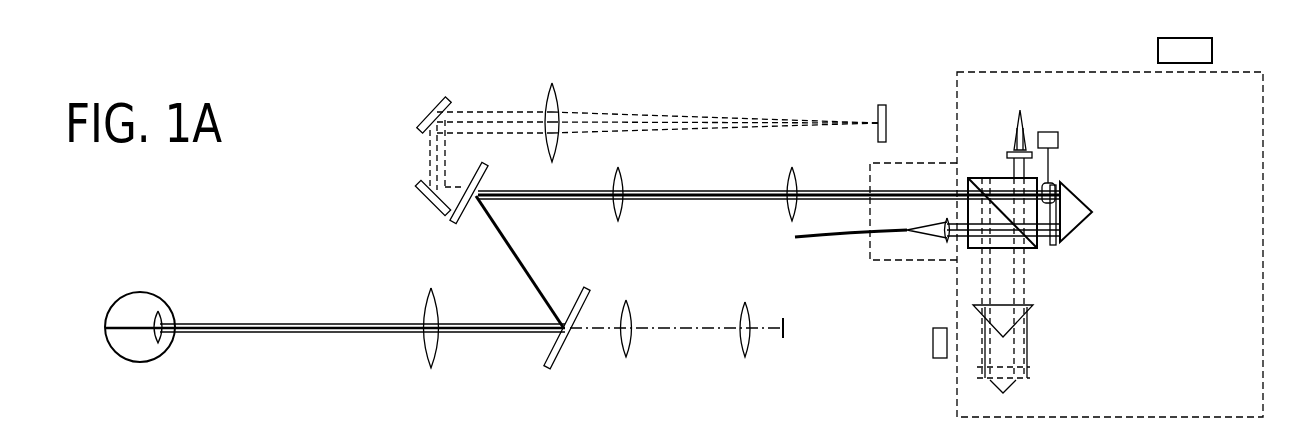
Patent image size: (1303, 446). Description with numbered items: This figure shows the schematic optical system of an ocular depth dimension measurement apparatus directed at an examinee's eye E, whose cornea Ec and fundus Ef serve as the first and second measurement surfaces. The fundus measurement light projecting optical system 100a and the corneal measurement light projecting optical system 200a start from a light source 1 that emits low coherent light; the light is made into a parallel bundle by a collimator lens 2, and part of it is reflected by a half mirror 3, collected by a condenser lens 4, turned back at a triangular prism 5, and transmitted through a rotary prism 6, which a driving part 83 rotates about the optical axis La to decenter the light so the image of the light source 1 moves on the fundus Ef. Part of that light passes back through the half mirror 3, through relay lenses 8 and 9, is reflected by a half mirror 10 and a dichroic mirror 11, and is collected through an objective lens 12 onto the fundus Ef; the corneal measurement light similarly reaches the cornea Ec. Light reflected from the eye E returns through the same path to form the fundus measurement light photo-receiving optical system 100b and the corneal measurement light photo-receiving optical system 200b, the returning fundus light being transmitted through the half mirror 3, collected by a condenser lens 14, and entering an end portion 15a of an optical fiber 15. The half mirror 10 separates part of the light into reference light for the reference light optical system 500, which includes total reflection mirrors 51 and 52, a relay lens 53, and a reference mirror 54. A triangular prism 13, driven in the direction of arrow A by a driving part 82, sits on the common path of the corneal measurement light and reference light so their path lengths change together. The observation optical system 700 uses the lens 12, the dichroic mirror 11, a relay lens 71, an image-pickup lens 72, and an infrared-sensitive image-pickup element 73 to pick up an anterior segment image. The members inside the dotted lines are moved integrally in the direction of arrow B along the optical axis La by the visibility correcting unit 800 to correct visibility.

The light source 1 is at (1020, 110).
The collimator lens 2 is at (1008, 155).
The half mirror 3 is at (963, 180).
The condenser lens 4 is at (1054, 247).
The triangular prism 5 is at (1090, 227).
The rotary prism 6 is at (1054, 182).
The relay lens 8 is at (788, 203).
The relay lens 9 is at (614, 214).
The half mirror 10 is at (466, 226).
The dichroic mirror 11 is at (545, 365).
The objective lens 12 is at (427, 350).
The triangular prism 13 is at (1038, 315).
The condenser lens 14 is at (943, 242).
The optical fiber 15 is at (838, 240).
The end portion 15a is at (898, 232).
The total reflection mirror 51 is at (417, 205).
The total reflection mirror 52 is at (427, 122).
The relay lens 53 is at (545, 92).
The reference mirror 54 is at (880, 107).
The relay lens 71 is at (630, 315).
The image-pickup lens 72 is at (740, 313).
The image-pickup element 73 is at (783, 320).
The driving part 82 is at (938, 360).
The driving part 83 is at (1055, 132).
The fundus measurement light projecting optical system 100a is at (1156, 301).
The fundus measurement light photo-receiving optical system 100b is at (1083, 261).
The corneal measurement light projecting optical system 200a is at (853, 343).
The corneal measurement light photo-receiving optical system 200b is at (916, 314).
The reference light optical system 500 is at (692, 85).
The observation optical system 700 is at (674, 357).
The visibility correcting unit 800 is at (1158, 46).
The arrow A is at (967, 380).
The arrow B is at (1083, 62).
The examinee's eye E is at (139, 278).
The fundus Ef is at (107, 335).
The cornea Ec is at (178, 332).
The optical axis La is at (765, 191).